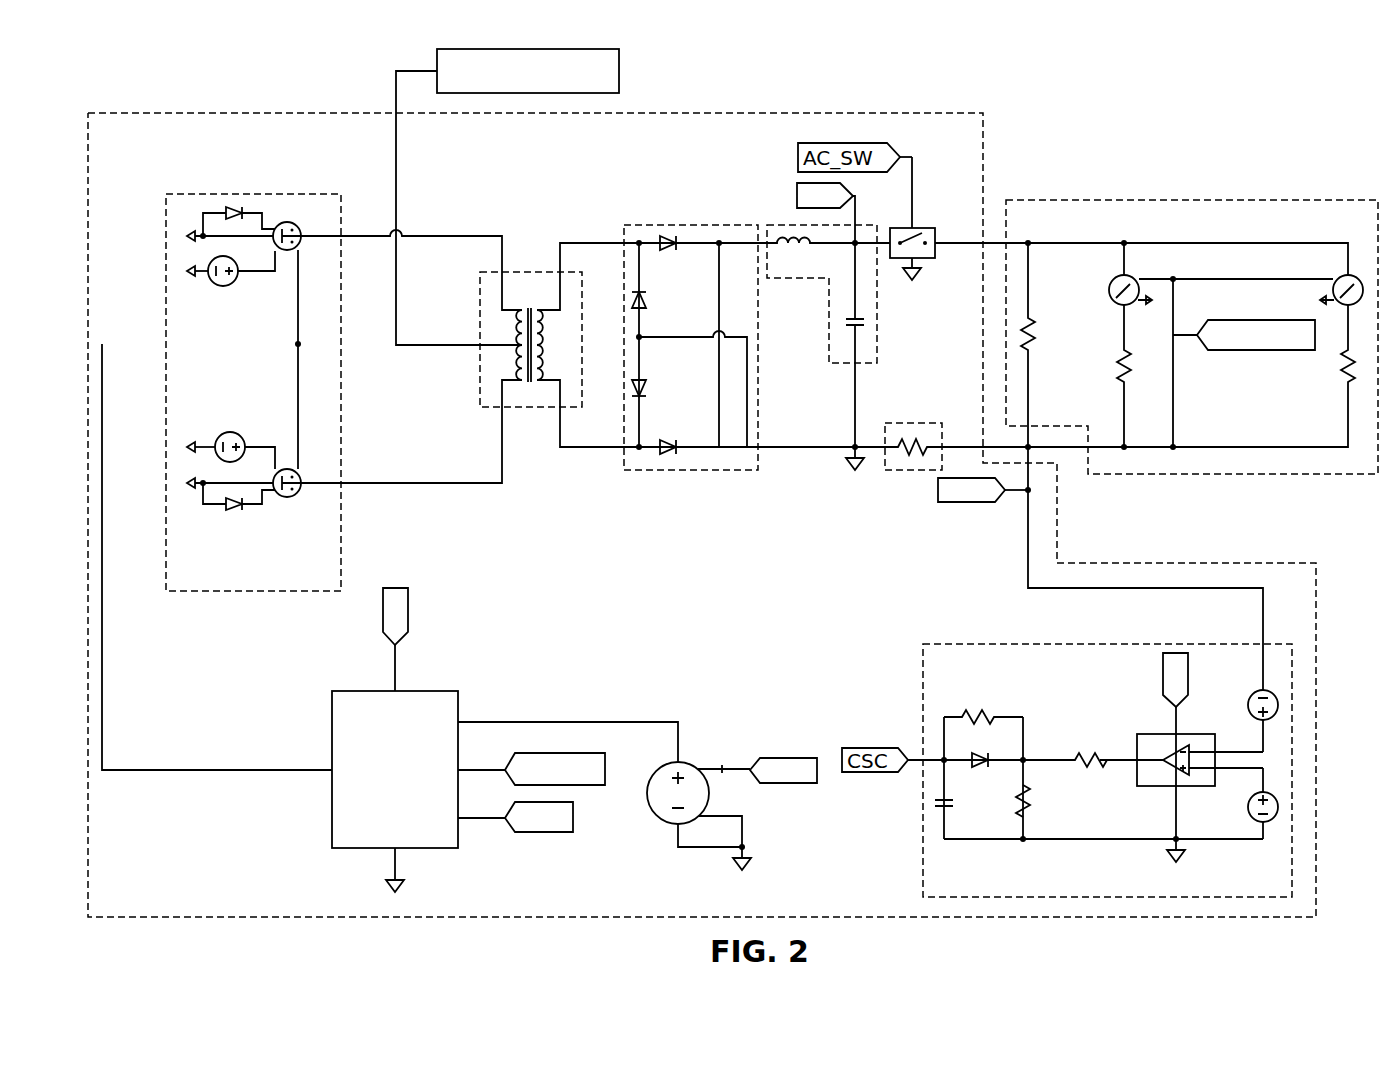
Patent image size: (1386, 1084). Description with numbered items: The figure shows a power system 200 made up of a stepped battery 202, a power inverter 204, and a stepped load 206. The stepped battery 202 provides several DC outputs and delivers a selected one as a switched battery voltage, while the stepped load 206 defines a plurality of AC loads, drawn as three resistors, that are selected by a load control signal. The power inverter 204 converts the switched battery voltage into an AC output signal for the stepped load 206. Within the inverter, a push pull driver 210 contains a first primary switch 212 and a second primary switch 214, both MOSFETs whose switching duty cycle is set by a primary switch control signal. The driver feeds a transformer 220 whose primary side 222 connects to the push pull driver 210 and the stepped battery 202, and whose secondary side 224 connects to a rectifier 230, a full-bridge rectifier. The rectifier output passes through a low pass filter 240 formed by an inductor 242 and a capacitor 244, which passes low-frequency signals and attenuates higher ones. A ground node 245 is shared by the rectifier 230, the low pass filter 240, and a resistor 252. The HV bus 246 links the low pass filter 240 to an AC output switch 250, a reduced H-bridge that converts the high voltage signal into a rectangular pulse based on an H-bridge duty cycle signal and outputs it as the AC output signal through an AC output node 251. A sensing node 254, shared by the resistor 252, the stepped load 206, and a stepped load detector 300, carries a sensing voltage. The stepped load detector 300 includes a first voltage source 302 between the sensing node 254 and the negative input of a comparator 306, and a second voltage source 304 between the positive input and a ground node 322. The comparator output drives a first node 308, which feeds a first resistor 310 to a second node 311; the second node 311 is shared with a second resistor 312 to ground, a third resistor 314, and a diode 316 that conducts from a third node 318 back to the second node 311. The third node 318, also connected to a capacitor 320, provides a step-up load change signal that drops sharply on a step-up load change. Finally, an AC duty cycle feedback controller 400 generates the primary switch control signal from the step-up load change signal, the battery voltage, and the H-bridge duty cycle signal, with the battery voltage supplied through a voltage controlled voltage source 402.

The power system 200 is at (1268, 92).
The stepped battery 202 is at (620, 71).
The power inverter 204 is at (906, 113).
The stepped load 206 is at (1193, 200).
The push pull driver 210 is at (295, 194).
The first primary switch 212 is at (262, 290).
The second primary switch 214 is at (263, 425).
The transformer 220 is at (525, 272).
The primary side 222 is at (510, 352).
The secondary side 224 is at (552, 352).
The rectifier 230 is at (670, 225).
The low pass filter 240 is at (878, 308).
The inductor 242 is at (770, 232).
The capacitor 244 is at (846, 322).
The ground node 245 is at (851, 462).
The HV bus 246 is at (779, 240).
The AC output switch 250 is at (930, 228).
The AC output node 251 is at (960, 250).
The resistor 252 is at (912, 471).
The sensing node 254 is at (1022, 494).
The stepped load detector 300 is at (985, 644).
The first voltage source 302 is at (1280, 703).
The second voltage source 304 is at (1280, 805).
The comparator 306 is at (1206, 734).
The first node 308 is at (1116, 757).
The first resistor 310 is at (1090, 768).
The second node 311 is at (1027, 757).
The second resistor 312 is at (1030, 800).
The third resistor 314 is at (985, 714).
The diode 316 is at (978, 770).
The third node 318 is at (941, 757).
The capacitor 320 is at (934, 803).
The ground node 322 is at (1097, 840).
The AC duty cycle feedback controller 400 is at (421, 790).
The voltage controlled voltage source 402 is at (690, 763).